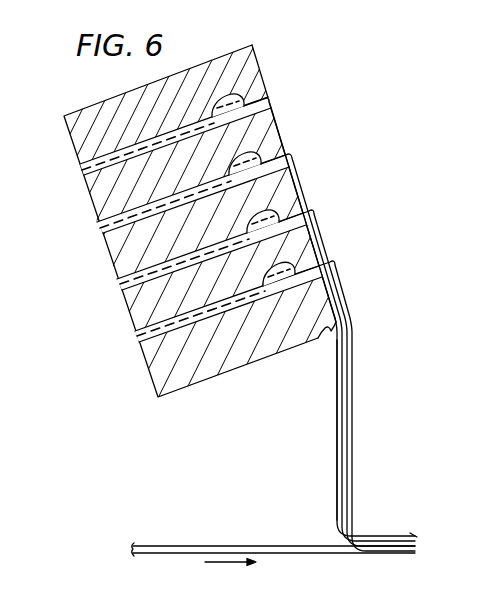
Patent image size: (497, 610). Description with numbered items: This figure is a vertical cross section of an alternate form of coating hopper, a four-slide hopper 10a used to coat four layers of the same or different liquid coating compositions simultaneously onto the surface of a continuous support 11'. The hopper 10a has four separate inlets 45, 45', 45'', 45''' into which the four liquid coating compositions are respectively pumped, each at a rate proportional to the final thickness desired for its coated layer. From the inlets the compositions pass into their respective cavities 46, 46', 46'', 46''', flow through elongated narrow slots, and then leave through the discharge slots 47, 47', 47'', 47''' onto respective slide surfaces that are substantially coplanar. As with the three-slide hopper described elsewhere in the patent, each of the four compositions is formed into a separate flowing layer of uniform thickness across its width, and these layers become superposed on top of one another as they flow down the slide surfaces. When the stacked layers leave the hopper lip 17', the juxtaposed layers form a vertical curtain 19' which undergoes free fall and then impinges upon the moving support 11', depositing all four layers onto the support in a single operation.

The four-slide hopper 10a is at (115, 317).
The inlet 45 is at (208, 315).
The inlet 45' is at (188, 258).
The inlet 45'' is at (167, 201).
The inlet 45''' is at (154, 141).
The cavity 46 is at (308, 259).
The cavity 46' is at (293, 206).
The cavity 46'' is at (277, 145).
The cavity 46''' is at (256, 81).
The discharge slot 47 is at (355, 405).
The discharge slot 47' is at (347, 374).
The discharge slot 47'' is at (338, 341).
The discharge slot 47''' is at (329, 303).
The hopper lip 17' is at (319, 348).
The vertical curtain 19' is at (364, 430).
The continuous support 11' is at (274, 536).